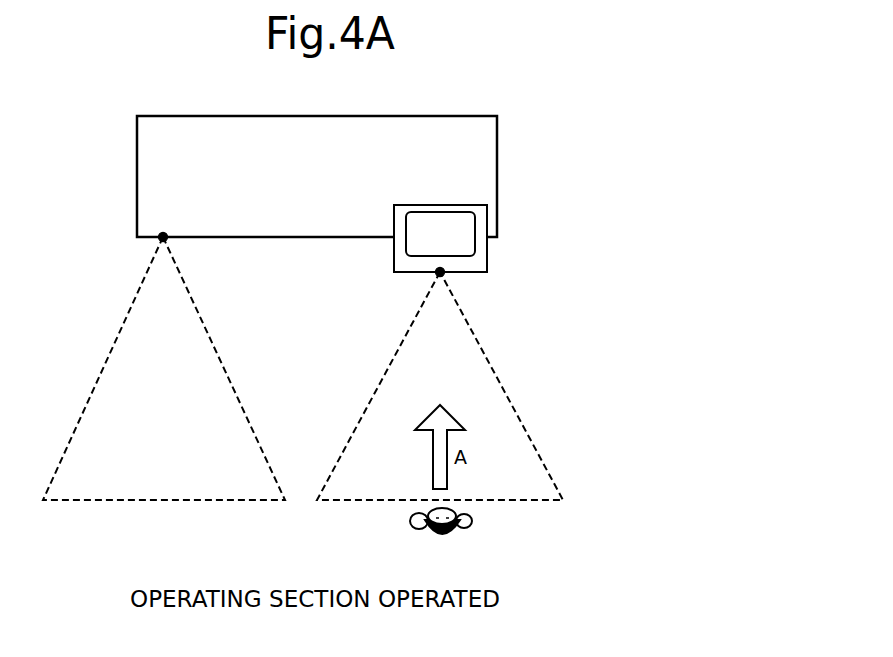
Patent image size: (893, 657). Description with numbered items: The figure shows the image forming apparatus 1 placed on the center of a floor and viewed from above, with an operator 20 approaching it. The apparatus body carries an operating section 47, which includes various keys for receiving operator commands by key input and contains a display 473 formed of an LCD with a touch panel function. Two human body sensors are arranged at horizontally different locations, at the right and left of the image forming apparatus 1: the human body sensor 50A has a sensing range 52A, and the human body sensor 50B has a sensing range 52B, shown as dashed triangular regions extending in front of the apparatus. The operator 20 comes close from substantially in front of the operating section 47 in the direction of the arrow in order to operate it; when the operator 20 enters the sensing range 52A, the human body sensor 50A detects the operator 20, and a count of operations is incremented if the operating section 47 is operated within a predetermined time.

The image forming apparatus 1 is at (503, 146).
The operating section 47 is at (488, 262).
The display 473 is at (428, 225).
The human body sensor 50A is at (444, 276).
The human body sensor 50B is at (167, 241).
The sensing range 52A is at (348, 502).
The sensing range 52B is at (158, 502).
The operator 20 is at (472, 521).